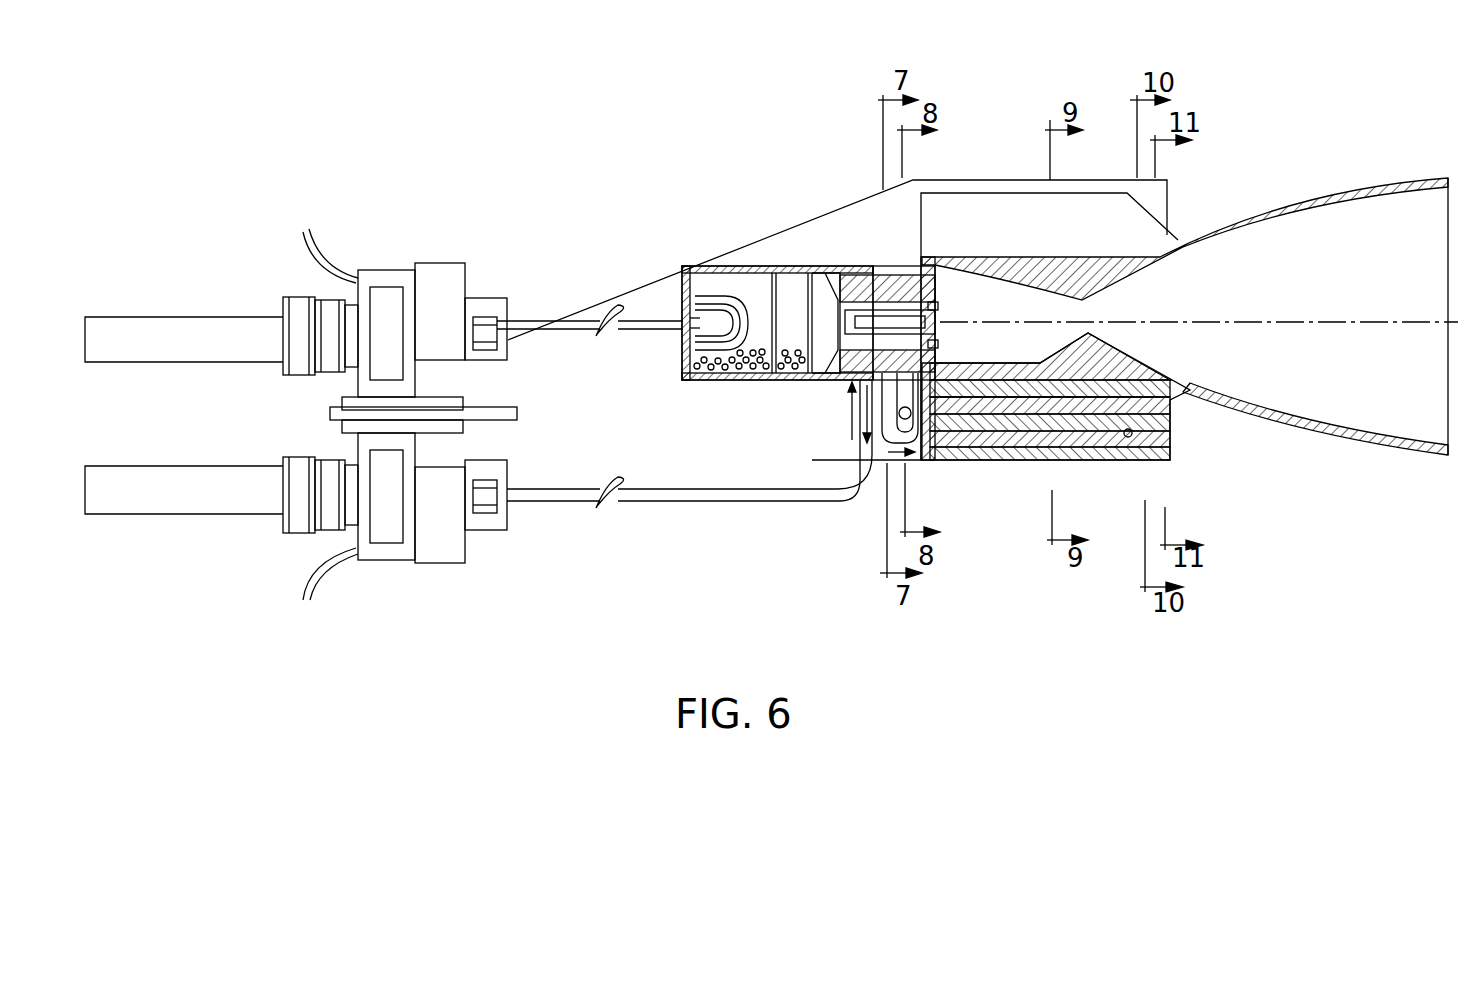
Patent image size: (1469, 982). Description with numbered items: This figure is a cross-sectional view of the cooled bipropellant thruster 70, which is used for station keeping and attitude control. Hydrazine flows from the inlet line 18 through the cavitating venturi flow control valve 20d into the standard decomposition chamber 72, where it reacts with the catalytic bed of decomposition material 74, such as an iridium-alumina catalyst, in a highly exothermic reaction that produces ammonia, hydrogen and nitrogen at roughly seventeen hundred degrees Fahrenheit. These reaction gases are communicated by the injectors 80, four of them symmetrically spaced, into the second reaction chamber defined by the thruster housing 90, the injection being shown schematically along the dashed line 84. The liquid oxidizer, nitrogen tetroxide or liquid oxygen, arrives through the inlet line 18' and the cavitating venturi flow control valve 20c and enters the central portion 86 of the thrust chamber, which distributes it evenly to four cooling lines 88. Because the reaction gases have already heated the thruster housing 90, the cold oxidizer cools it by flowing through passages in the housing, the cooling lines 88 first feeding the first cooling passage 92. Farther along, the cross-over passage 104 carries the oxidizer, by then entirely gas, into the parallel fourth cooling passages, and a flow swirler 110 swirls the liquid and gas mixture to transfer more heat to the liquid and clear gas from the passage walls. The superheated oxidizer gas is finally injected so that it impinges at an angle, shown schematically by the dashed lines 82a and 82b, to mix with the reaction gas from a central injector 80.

The inlet line 18 is at (184, 310).
The inlet line 18' is at (184, 540).
The cavitating venturi flow control valve 20d is at (443, 266).
The cavitating venturi flow control valve 20c is at (443, 566).
The cooled bipropellant thruster 70 is at (716, 161).
The decomposition chamber 72 is at (723, 287).
The catalytic bed of decomposition material 74 is at (742, 352).
The injectors 80 is at (903, 283).
The dashed line 82a is at (936, 358).
The dashed line 82b is at (936, 322).
The dashed line 84 is at (1173, 318).
The central portion 86 is at (907, 283).
The cooling lines 88 is at (888, 440).
The thruster housing 90 is at (1092, 460).
The first cooling passage 92 is at (1013, 462).
The cross-over passage 104 is at (1125, 355).
The flow swirler 110 is at (1150, 405).